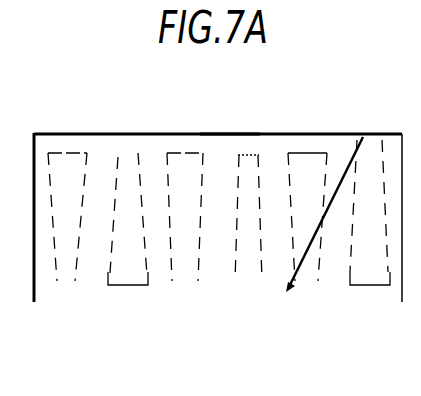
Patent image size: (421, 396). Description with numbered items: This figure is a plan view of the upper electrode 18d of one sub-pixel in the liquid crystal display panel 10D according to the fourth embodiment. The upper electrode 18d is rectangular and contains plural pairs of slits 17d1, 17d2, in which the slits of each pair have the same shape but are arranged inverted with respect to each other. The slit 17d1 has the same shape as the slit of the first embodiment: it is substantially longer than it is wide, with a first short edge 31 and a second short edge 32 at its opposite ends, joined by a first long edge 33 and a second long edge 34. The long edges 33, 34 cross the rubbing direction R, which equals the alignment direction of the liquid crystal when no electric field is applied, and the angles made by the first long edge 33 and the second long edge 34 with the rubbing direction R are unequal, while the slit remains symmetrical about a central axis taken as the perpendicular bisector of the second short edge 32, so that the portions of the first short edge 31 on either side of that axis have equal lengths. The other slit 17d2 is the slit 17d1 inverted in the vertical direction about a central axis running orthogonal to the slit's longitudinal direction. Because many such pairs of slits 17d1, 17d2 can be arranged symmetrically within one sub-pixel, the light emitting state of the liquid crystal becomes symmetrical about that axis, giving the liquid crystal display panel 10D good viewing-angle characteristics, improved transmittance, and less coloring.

The liquid crystal display panel 10D is at (92, 92).
The first short edge 31 is at (127, 158).
The second short edge 32 is at (128, 285).
The first long edge 33 is at (104, 256).
The second long edge 34 is at (147, 260).
The upper electrode 18d is at (225, 150).
The slit 17d1 is at (302, 153).
The slit 17d2 is at (365, 175).
The rubbing direction R is at (324, 206).